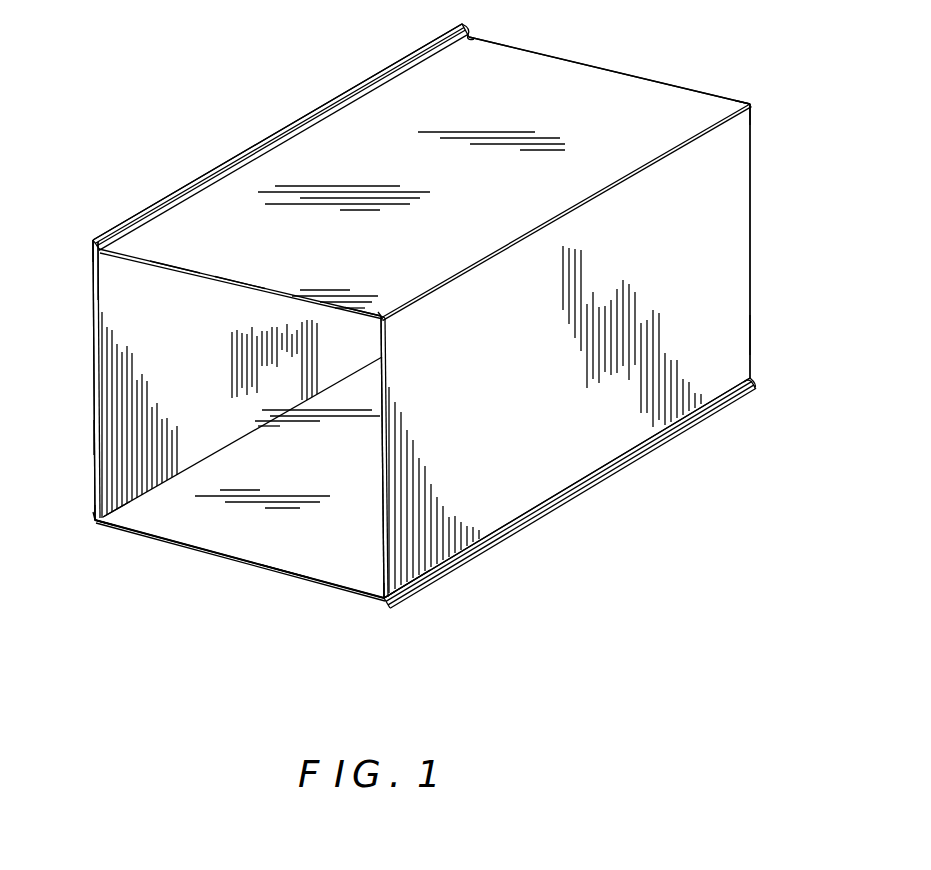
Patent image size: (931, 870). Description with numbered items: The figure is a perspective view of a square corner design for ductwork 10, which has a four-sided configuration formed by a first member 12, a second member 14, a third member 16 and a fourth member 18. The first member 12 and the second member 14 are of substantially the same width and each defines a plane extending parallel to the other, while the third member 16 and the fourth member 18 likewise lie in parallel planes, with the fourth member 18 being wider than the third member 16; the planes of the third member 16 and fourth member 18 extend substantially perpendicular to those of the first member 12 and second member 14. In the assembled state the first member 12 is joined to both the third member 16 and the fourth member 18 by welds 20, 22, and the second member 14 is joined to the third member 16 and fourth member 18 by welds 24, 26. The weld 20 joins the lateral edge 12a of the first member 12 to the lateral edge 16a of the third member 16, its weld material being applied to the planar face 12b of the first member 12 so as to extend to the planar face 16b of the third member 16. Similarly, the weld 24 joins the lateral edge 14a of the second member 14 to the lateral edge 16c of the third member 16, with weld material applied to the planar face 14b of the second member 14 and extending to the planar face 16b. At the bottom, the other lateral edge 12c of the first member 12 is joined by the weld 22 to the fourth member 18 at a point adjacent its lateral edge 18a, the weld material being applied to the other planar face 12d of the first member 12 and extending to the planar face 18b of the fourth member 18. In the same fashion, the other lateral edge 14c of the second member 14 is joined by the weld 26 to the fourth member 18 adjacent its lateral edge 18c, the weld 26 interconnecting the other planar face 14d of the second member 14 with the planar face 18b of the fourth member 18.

The ductwork 10 is at (586, 38).
The first member 12 is at (92, 372).
The lateral edge of first member 12a is at (96, 237).
The planar face of first member 12b is at (106, 278).
The other lateral edge of first member 12c is at (115, 514).
The other planar face of first member 12d is at (95, 436).
The second member 14 is at (752, 272).
The lateral edge of second member 14a is at (745, 100).
The planar face of second member 14b is at (381, 444).
The other lateral edge of second member 14c is at (384, 600).
The other planar face of second member 14d is at (745, 333).
The third member 16 is at (644, 80).
The lateral edge of third member 16a is at (176, 270).
The planar face of third member 16b is at (243, 282).
The lateral edge of third member 16c is at (378, 324).
The fourth member 18 is at (178, 544).
The lateral edge of fourth member 18a is at (95, 525).
The planar face of fourth member 18b is at (286, 570).
The lateral edge of fourth member 18c is at (414, 592).
The weld 20 is at (474, 39).
The weld 22 is at (94, 519).
The weld 24 is at (389, 345).
The weld 26 is at (756, 381).